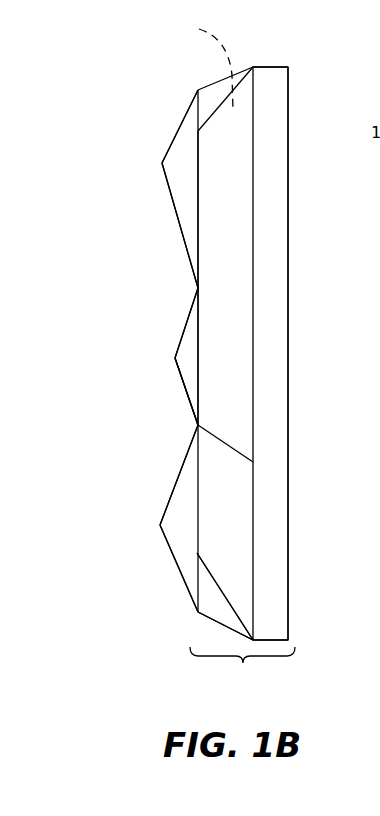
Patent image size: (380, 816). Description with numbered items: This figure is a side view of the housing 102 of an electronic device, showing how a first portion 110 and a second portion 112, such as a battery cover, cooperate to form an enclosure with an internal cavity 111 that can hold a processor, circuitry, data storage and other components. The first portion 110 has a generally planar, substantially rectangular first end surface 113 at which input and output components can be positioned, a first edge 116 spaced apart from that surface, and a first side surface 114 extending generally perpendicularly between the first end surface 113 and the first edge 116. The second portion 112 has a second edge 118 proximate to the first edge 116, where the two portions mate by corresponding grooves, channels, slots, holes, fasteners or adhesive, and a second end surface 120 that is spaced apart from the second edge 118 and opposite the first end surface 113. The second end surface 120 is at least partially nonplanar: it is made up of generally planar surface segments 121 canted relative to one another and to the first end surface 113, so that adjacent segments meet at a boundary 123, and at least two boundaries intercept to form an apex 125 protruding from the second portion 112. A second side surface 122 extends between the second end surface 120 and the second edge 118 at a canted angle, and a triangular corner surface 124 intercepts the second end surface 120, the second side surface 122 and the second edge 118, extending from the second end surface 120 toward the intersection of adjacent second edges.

The housing 102 is at (242, 671).
The first portion 110 is at (300, 409).
The internal cavity 111 is at (198, 65).
The second portion 112 is at (141, 134).
The first end surface 113 is at (288, 316).
The first side surfaces 114 is at (280, 74).
The first edges 116 is at (253, 572).
The second edges 118 is at (253, 462).
The second end surface 120 is at (196, 296).
The surface segments 121 is at (192, 405).
The second side surfaces 122 is at (217, 542).
The boundary 123 is at (172, 205).
The corner surface 124 is at (215, 606).
The apex 125 is at (162, 164).